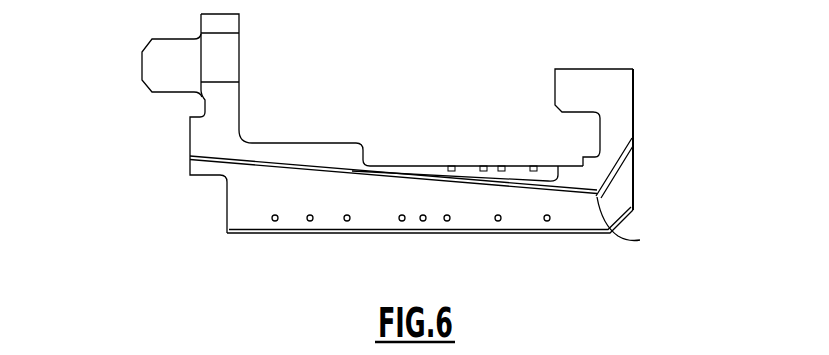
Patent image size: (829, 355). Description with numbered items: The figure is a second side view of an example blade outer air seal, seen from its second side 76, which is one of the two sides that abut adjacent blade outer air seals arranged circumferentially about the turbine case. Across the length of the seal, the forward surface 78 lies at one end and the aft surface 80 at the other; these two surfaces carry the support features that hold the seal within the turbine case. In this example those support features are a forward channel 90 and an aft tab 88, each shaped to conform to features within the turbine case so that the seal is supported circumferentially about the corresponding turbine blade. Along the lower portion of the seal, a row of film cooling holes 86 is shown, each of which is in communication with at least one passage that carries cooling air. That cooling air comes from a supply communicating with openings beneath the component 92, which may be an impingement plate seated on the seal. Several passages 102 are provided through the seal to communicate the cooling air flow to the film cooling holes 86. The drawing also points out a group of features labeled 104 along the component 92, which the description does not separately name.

The second side 76 is at (268, 190).
The forward surface 78 is at (634, 150).
The aft surface 80 is at (190, 132).
The film cooling holes 86 is at (277, 221).
The aft tab 88 is at (142, 64).
The forward channel 90 is at (575, 131).
The component 92 is at (421, 165).
The passages 102 is at (640, 240).
The protrusions 104 is at (528, 165).